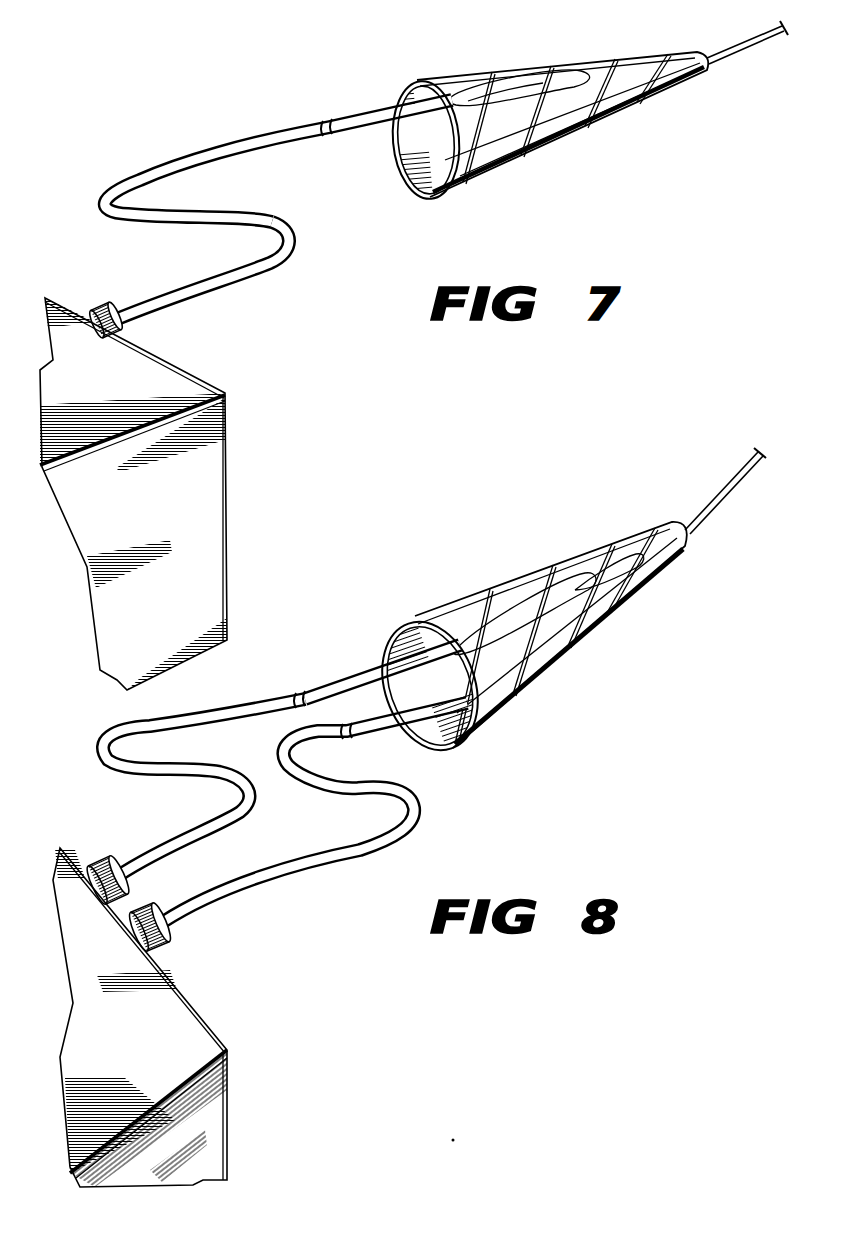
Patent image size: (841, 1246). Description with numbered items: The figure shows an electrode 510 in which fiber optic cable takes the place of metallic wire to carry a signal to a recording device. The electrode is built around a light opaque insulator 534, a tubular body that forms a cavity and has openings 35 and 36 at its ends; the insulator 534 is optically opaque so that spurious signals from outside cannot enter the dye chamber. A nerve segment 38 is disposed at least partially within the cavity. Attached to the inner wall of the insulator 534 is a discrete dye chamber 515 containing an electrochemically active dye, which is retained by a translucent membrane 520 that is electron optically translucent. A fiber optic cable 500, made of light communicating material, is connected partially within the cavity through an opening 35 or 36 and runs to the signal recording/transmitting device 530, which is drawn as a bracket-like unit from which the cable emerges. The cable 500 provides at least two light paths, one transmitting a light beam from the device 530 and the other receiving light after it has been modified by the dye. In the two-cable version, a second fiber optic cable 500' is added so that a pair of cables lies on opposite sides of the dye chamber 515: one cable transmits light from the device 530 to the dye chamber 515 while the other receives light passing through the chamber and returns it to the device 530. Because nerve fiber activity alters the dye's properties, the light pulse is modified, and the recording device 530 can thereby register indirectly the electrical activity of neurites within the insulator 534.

In FIG. 7, the opening 35 is at (708, 56).
In FIG. 8, the opening 35 is at (681, 528).
In FIG. 7, the opening 36 is at (411, 152).
In FIG. 8, the opening 36 is at (426, 727).
In FIG. 7, the nerve segment 38 is at (626, 93).
In FIG. 8, the nerve segment 38 is at (591, 605).
In FIG. 7, the fiber optic cable 500 is at (203, 248).
In FIG. 8, the fiber optic cable 500 is at (204, 787).
In FIG. 8, the fiber optic cable 500' is at (315, 812).
In FIG. 7, the electrode 510 is at (330, 22).
In FIG. 8, the electrode 510 is at (311, 666).
In FIG. 7, the dye chamber 515 is at (513, 88).
In FIG. 8, the dye chamber 515 is at (500, 604).
In FIG. 7, the translucent membrane 520 is at (514, 96).
In FIG. 8, the translucent membrane 520 is at (560, 579).
In FIG. 7, the signal recording/transmitting device 530 is at (207, 392).
In FIG. 8, the signal recording/transmitting device 530 is at (197, 1024).
In FIG. 7, the light opaque insulator 534 is at (531, 162).
In FIG. 8, the light opaque insulator 534 is at (545, 675).